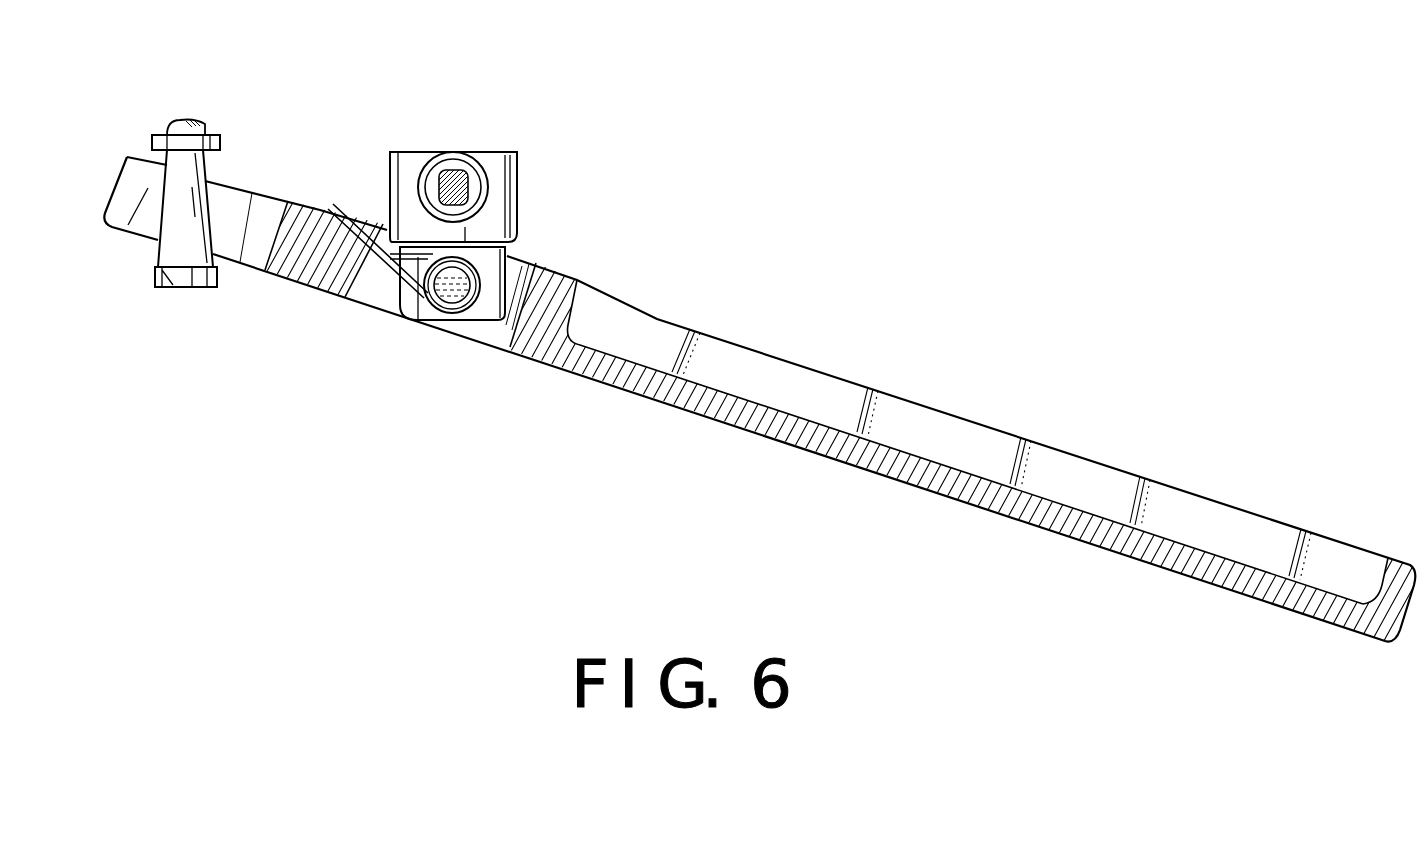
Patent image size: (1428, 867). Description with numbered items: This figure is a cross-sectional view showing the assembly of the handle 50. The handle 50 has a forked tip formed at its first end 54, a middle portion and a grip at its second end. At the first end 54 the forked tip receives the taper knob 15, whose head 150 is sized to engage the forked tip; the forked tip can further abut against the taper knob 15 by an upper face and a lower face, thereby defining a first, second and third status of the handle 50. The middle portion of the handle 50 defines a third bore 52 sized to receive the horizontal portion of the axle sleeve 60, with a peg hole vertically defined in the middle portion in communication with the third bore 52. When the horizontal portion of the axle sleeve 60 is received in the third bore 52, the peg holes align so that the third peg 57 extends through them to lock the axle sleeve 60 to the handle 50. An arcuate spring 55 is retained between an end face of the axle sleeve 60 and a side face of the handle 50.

The taper knob 15 is at (193, 190).
The handle 50 is at (995, 412).
The third bore 52 is at (497, 343).
The first end 54 is at (240, 268).
The arcuate spring 55 is at (398, 255).
The third peg 57 is at (449, 292).
The axle sleeve 60 is at (519, 203).
The head 150 is at (157, 288).